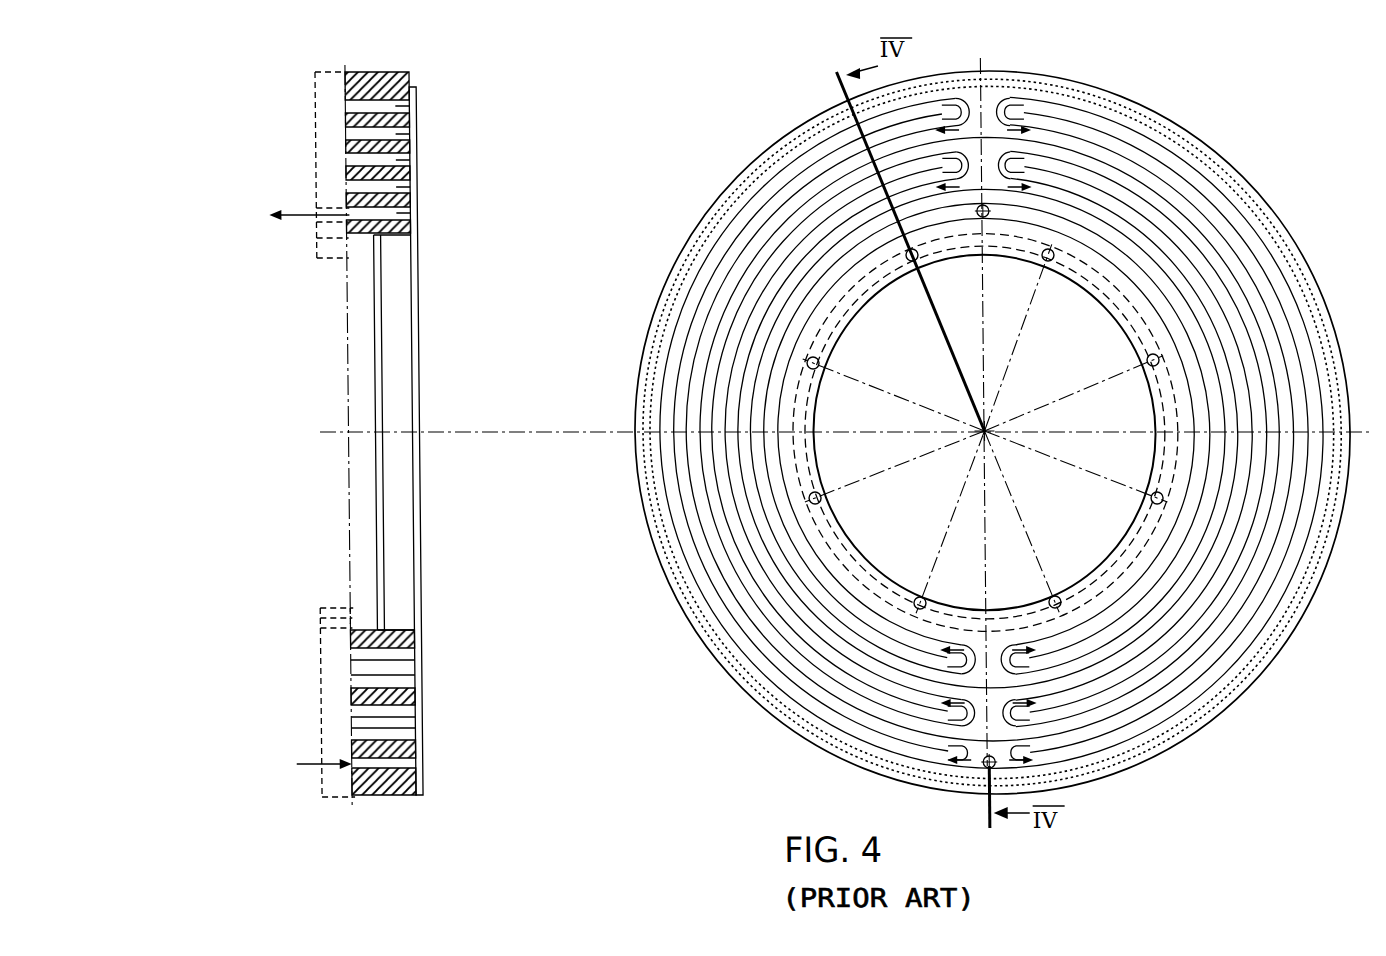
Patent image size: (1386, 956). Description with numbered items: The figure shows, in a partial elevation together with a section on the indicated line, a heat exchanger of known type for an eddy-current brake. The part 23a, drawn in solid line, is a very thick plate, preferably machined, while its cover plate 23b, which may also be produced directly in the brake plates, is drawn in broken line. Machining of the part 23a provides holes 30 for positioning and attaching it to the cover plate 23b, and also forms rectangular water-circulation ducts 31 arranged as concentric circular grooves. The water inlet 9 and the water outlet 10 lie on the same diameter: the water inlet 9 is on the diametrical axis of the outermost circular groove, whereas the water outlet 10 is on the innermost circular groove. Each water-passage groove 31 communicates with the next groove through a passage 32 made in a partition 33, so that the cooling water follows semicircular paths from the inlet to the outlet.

The water inlet 9 is at (992, 767).
The water outlet 10 is at (992, 211).
The part of heat exchanger 23a is at (1275, 194).
The cover plate 23b is at (313, 112).
The holes 30 is at (1156, 498).
The water-circulation ducts 31 is at (1154, 708).
The passage 32 is at (1003, 160).
The partition 33 is at (1146, 260).